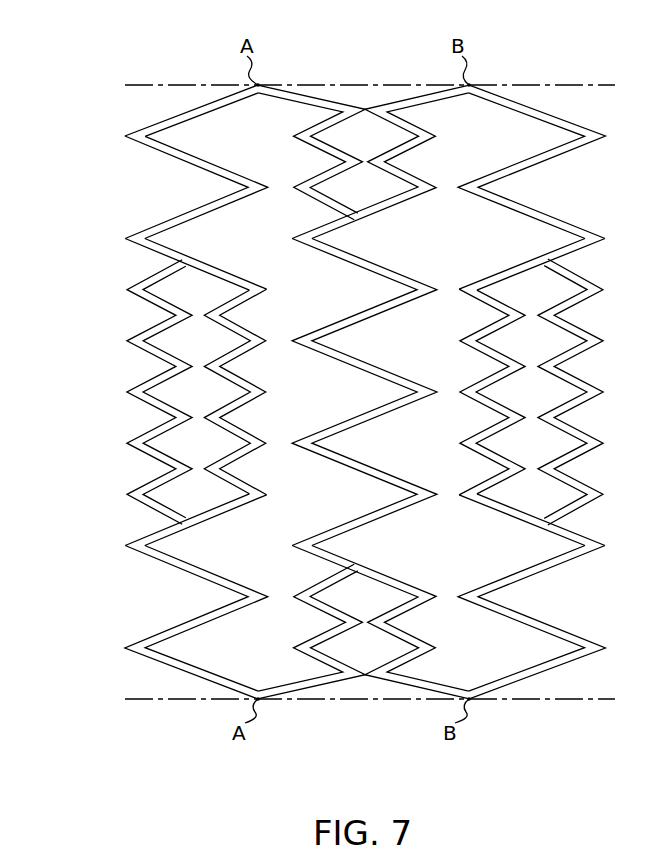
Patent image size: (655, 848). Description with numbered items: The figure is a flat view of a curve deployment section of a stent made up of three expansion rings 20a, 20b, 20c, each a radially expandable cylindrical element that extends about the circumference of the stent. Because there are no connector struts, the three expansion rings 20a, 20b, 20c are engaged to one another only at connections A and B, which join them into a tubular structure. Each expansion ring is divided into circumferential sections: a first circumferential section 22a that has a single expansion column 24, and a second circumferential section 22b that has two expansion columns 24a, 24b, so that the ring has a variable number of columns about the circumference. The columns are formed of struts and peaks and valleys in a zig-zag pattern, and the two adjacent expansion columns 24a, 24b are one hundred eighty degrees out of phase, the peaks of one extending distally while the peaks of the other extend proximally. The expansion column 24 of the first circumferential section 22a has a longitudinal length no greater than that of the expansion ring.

The first expansion ring 20a is at (196, 410).
The second expansion ring 20b is at (463, 742).
The third expansion ring 20c is at (605, 742).
The first circumferential section 22a is at (114, 239).
The second circumferential section 22b is at (321, 393).
The expansion column 24 is at (191, 76).
The first expansion column of second circumferential section 24a is at (114, 392).
The second expansion column of second circumferential section 24b is at (282, 396).